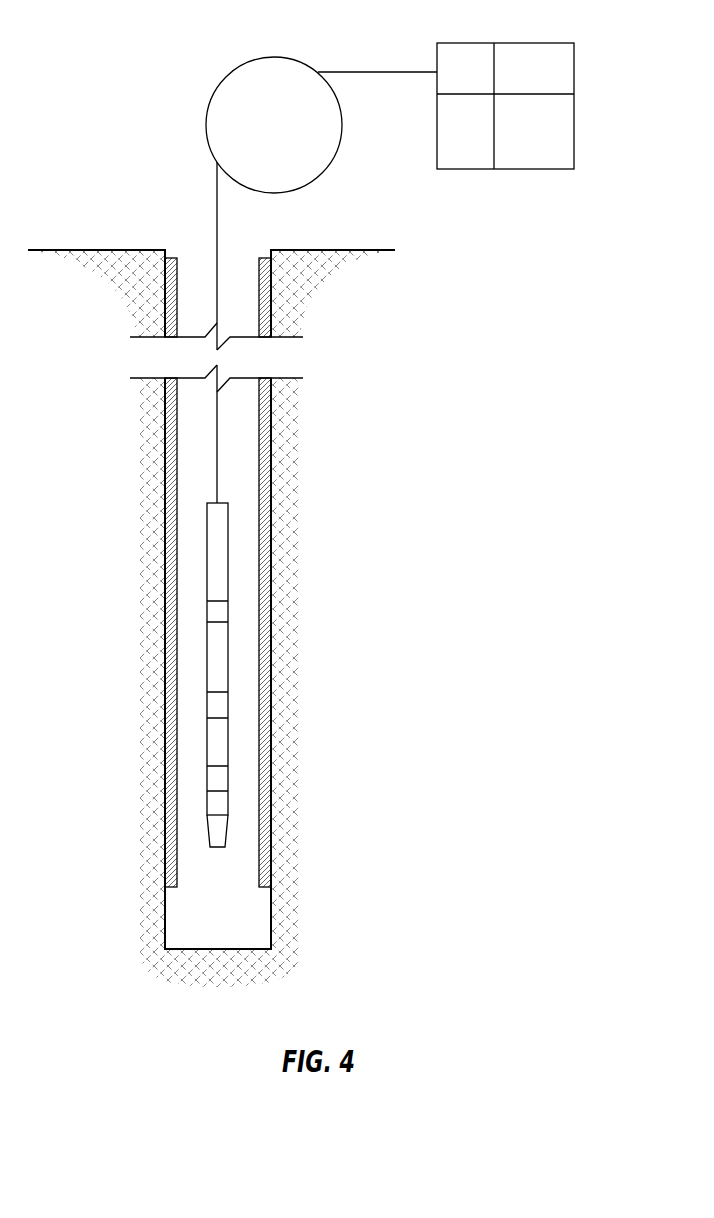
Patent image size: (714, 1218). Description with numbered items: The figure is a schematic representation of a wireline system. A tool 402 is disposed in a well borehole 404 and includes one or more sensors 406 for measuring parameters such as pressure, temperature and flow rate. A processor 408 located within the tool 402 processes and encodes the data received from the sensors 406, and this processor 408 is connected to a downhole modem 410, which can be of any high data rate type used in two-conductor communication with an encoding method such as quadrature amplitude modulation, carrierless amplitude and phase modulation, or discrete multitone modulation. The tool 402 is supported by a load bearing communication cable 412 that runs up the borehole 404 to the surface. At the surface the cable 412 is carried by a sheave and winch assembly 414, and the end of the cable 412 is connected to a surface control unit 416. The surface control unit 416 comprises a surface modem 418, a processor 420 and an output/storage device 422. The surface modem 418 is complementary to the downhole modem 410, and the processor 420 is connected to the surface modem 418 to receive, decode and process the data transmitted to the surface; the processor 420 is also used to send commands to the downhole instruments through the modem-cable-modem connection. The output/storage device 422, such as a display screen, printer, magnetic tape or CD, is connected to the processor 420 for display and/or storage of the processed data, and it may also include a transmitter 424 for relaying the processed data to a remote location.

The tool 402 is at (312, 557).
The well borehole 404 is at (200, 249).
The sensors 406 is at (222, 777).
The processor 408 is at (222, 705).
The downhole modem 410 is at (222, 612).
The load bearing communication cable 412 is at (218, 438).
The sheave and winch assembly 414 is at (236, 68).
The surface control unit 416 is at (437, 56).
The surface modem 418 is at (472, 60).
The processor 420 is at (455, 142).
The output/storage device 422 is at (565, 140).
The transmitter 424 is at (565, 75).